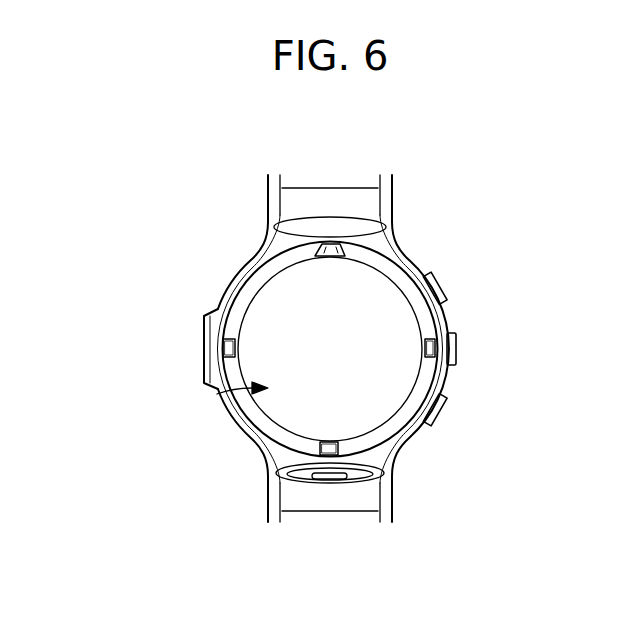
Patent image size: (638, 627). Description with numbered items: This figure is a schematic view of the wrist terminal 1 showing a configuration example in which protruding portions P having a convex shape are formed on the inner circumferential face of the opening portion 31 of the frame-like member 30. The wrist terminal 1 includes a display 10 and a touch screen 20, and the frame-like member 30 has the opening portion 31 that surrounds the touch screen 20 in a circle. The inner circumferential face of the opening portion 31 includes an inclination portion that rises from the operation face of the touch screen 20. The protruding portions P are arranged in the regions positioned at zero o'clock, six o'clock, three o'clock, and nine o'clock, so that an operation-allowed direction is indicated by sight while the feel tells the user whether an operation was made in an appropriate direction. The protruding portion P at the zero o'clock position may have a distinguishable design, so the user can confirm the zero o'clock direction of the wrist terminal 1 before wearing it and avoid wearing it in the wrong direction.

The wrist terminal 1 is at (146, 190).
The display 10 is at (216, 395).
The touch screen 20 is at (252, 301).
The frame-like member 30 is at (271, 247).
The opening portion 31 is at (377, 276).
The protruding portion P is at (330, 243).